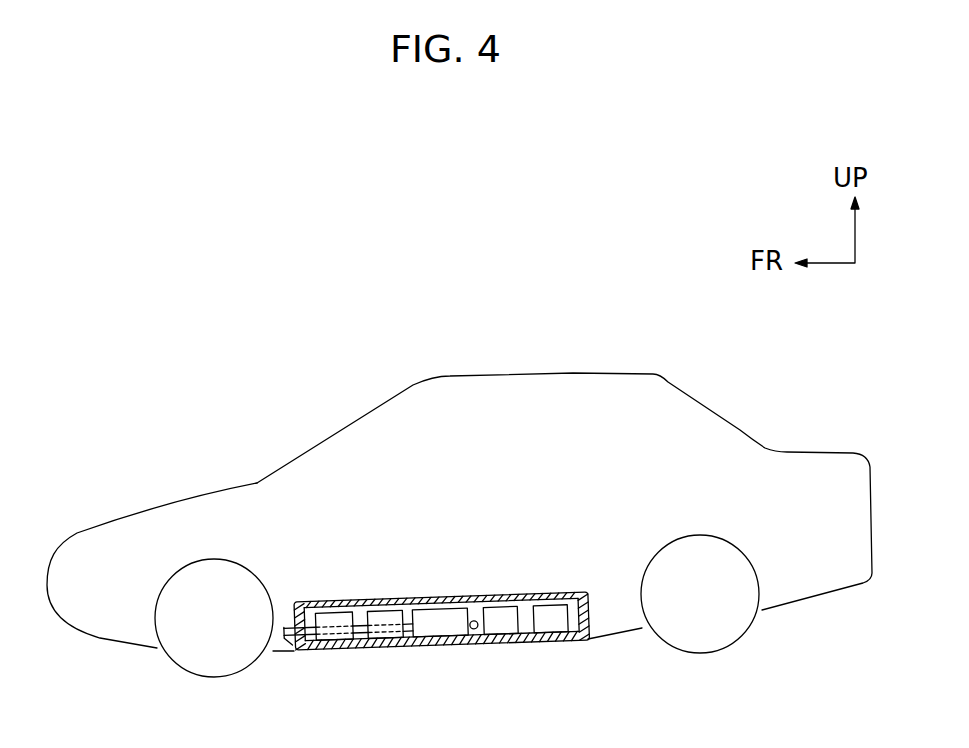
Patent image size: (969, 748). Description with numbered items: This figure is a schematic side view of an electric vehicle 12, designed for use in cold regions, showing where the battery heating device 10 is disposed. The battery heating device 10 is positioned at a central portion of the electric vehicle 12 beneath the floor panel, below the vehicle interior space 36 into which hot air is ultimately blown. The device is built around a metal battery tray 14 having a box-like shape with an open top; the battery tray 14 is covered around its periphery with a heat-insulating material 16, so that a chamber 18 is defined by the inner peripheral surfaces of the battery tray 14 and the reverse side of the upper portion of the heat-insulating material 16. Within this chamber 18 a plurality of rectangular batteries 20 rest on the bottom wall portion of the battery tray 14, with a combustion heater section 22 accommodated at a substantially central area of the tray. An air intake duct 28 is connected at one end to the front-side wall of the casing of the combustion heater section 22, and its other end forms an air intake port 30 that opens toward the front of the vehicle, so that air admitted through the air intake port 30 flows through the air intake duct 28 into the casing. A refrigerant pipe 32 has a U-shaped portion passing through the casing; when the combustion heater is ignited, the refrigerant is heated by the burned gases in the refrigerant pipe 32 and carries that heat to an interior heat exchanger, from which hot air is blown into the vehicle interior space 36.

The battery heating device 10 is at (517, 582).
The electric vehicle 12 is at (727, 395).
The battery tray 14 is at (412, 595).
The heat-insulating material 16 is at (575, 585).
The chamber 18 is at (525, 645).
The batteries 20 is at (380, 617).
The combustion heater section 22 is at (443, 630).
The air intake duct 28 is at (362, 642).
The air intake port 30 is at (283, 646).
The refrigerant pipe 32 is at (473, 621).
The vehicle interior space 36 is at (497, 482).